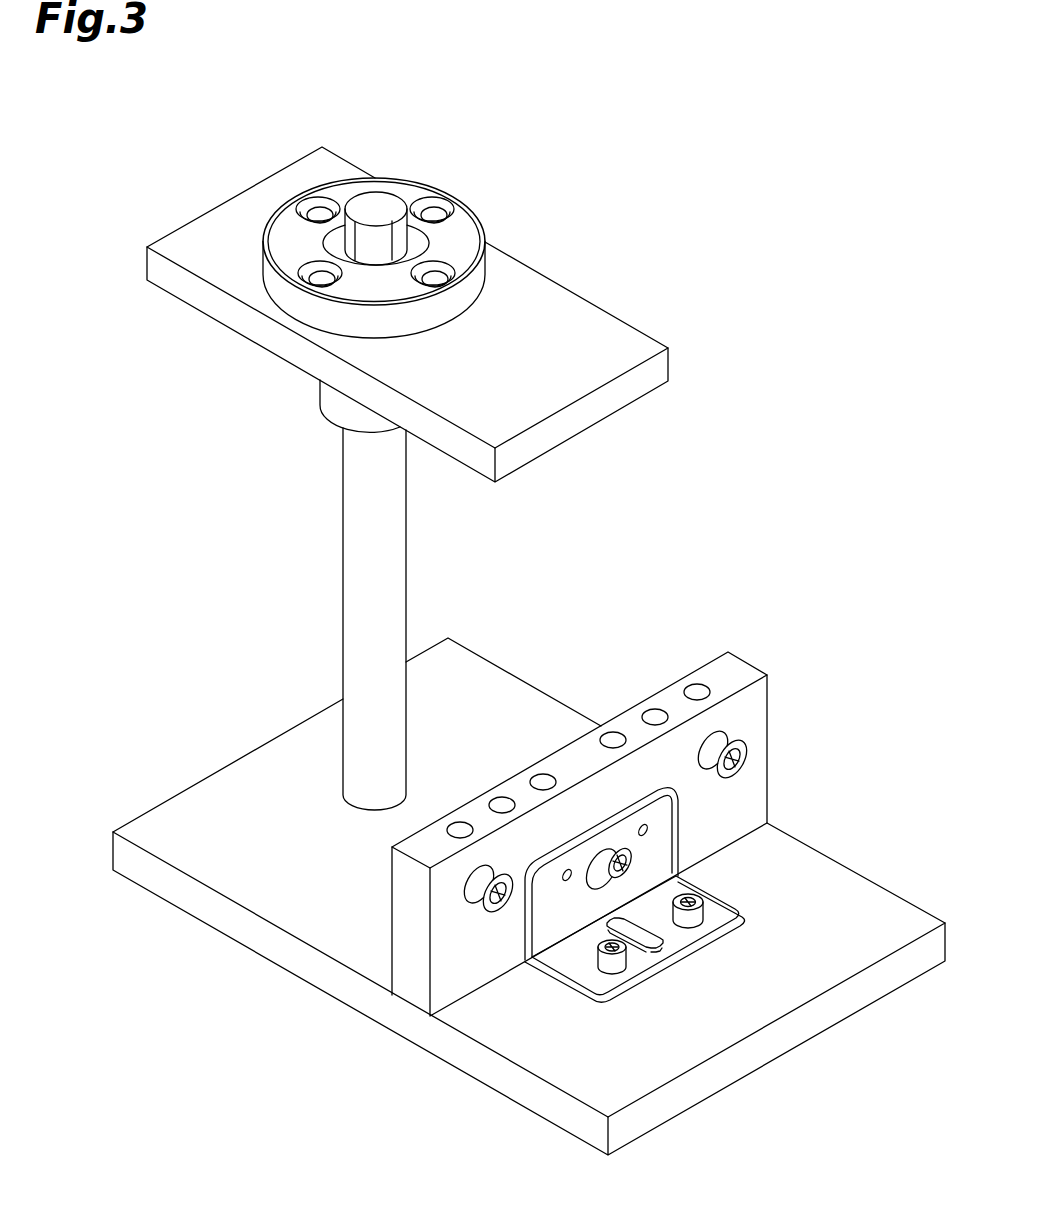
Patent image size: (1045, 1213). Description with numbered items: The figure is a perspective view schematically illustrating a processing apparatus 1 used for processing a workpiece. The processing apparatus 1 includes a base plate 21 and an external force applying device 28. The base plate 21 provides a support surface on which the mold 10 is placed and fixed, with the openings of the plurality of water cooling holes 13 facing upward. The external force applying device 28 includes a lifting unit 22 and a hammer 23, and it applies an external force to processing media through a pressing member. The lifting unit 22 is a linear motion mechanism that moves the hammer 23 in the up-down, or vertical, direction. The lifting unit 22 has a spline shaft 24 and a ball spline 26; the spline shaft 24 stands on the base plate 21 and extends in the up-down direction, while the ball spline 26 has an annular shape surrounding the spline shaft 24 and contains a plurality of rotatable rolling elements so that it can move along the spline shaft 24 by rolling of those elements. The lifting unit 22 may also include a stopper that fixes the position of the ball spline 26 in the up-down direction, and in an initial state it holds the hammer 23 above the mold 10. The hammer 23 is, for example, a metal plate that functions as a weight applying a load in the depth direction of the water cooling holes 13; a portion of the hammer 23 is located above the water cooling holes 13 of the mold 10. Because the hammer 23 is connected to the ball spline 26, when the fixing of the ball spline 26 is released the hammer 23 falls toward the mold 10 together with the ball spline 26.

The processing apparatus 1 is at (735, 172).
The mold 10 is at (733, 792).
The water cooling holes 13 is at (653, 713).
The base plate 21 is at (593, 1068).
The lifting unit 22 is at (178, 402).
The hammer 23 is at (518, 305).
The spline shaft 24 is at (378, 557).
The ball spline 26 is at (417, 180).
The external force applying device 28 is at (363, 446).